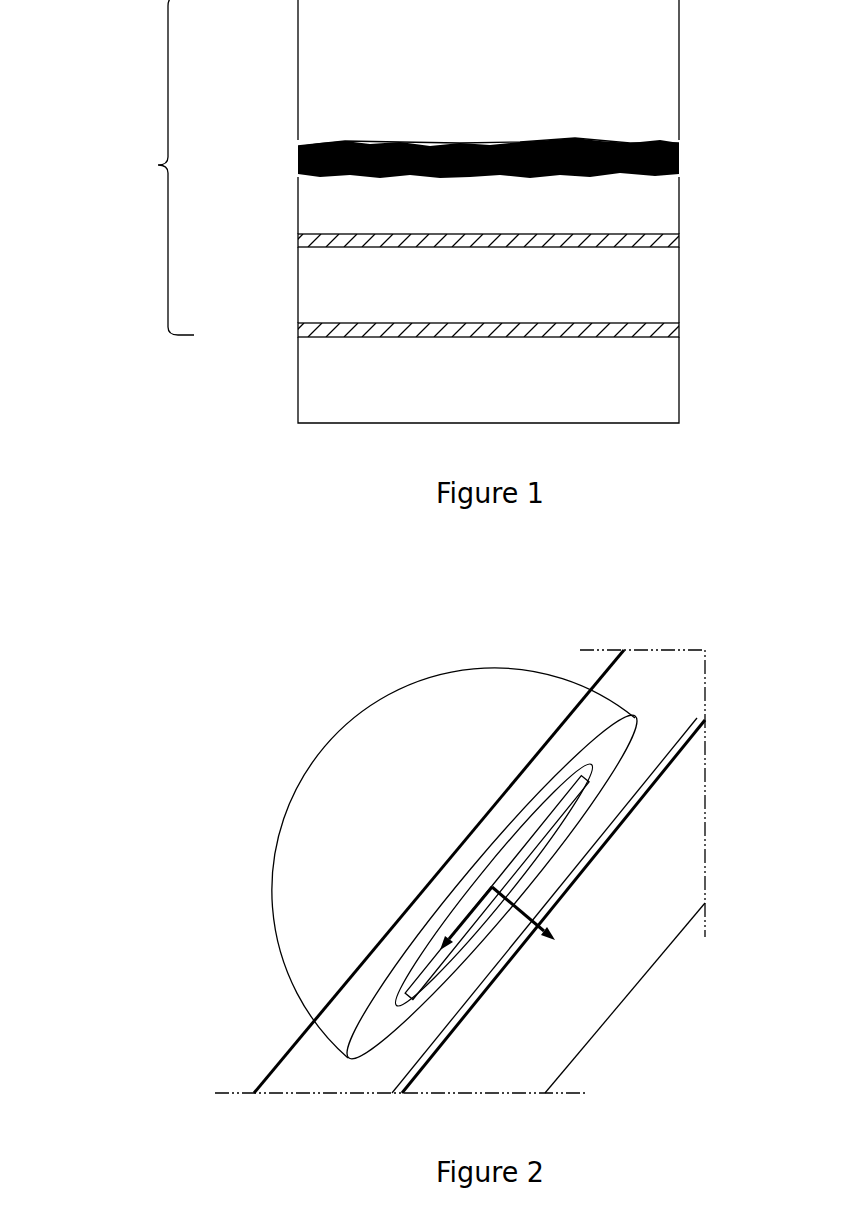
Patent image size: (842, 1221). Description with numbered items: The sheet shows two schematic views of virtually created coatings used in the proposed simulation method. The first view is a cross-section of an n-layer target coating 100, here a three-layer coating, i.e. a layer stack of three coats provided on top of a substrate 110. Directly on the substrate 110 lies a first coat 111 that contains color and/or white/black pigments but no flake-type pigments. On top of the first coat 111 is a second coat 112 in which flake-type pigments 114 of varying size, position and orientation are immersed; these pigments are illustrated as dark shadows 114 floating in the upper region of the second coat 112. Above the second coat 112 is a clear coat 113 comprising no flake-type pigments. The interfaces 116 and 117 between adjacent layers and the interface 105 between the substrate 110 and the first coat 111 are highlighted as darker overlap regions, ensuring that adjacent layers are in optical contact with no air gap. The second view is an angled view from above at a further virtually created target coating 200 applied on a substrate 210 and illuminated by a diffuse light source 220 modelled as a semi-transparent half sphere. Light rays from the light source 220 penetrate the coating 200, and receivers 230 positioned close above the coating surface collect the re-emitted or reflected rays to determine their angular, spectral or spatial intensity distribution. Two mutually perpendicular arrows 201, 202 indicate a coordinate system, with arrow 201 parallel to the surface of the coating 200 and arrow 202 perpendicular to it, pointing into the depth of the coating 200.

In FIG. 1, the n-layer target coating 100 is at (158, 165).
In FIG. 1, the interface 105 is at (680, 328).
In FIG. 1, the substrate 110 is at (298, 385).
In FIG. 1, the first coat 111 is at (298, 290).
In FIG. 1, the second coat 112 is at (298, 208).
In FIG. 1, the clear coat 113 is at (298, 92).
In FIG. 1, the flake-type pigments 114 is at (680, 172).
In FIG. 1, the interface 116 is at (680, 240).
In FIG. 1, the interface 117 is at (680, 148).
In FIG. 2, the target coating 200 is at (290, 1062).
In FIG. 2, the arrow 201 is at (466, 895).
In FIG. 2, the arrow 202 is at (510, 925).
In FIG. 2, the substrate 210 is at (598, 993).
In FIG. 2, the diffuse light source 220 is at (292, 822).
In FIG. 2, the receivers 230 is at (562, 855).